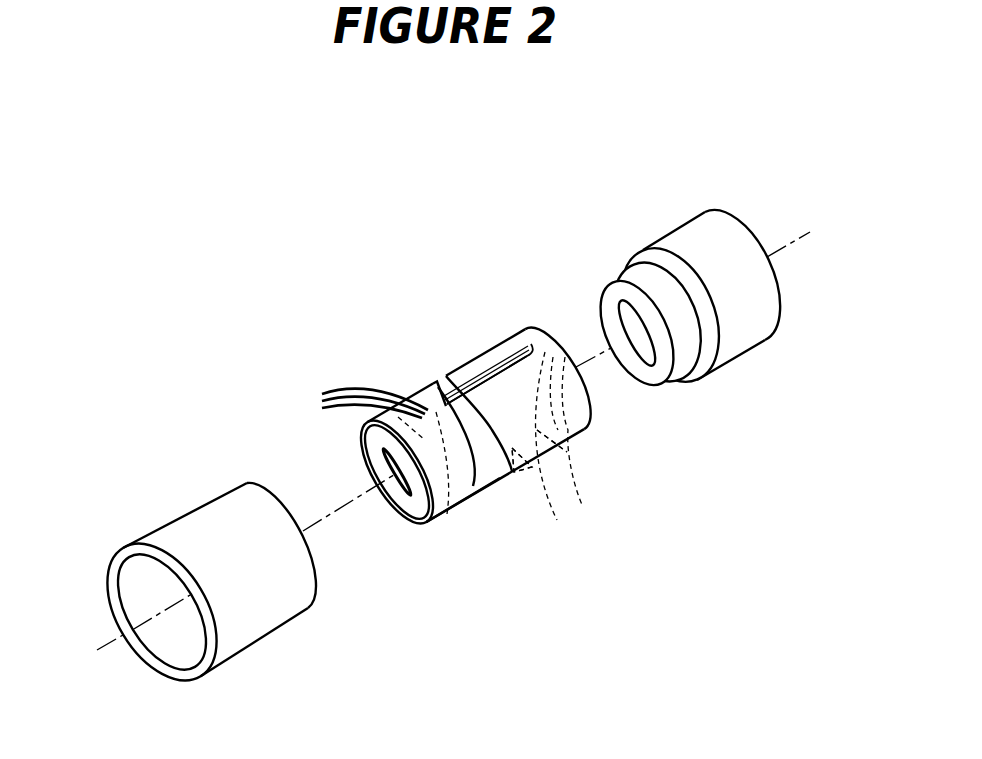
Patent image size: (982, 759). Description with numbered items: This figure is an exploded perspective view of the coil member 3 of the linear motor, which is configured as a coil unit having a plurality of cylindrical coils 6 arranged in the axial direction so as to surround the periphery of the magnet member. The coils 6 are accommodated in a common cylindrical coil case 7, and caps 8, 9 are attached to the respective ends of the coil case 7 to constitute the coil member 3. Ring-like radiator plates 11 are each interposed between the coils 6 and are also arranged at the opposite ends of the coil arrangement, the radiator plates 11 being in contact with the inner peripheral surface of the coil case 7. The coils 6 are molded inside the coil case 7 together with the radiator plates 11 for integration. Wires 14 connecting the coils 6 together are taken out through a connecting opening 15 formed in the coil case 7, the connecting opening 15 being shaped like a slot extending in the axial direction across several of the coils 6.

The coil member 3 is at (467, 335).
The coils 6 is at (536, 470).
The coil case 7 is at (432, 500).
The cap 8 is at (672, 238).
The cap 9 is at (177, 533).
The radiator plates 11 is at (413, 510).
The wires 14 is at (363, 402).
The connecting opening 15 is at (508, 360).